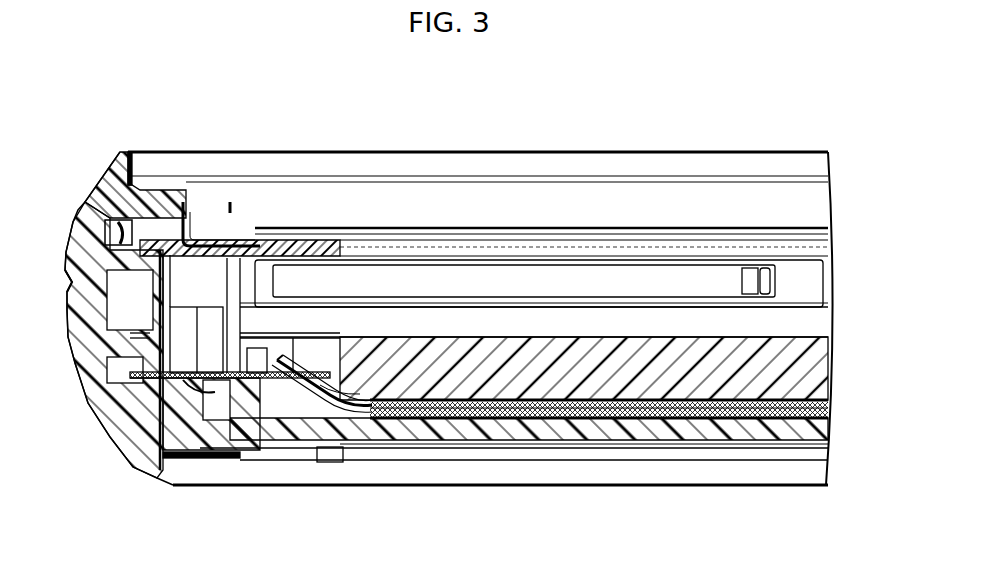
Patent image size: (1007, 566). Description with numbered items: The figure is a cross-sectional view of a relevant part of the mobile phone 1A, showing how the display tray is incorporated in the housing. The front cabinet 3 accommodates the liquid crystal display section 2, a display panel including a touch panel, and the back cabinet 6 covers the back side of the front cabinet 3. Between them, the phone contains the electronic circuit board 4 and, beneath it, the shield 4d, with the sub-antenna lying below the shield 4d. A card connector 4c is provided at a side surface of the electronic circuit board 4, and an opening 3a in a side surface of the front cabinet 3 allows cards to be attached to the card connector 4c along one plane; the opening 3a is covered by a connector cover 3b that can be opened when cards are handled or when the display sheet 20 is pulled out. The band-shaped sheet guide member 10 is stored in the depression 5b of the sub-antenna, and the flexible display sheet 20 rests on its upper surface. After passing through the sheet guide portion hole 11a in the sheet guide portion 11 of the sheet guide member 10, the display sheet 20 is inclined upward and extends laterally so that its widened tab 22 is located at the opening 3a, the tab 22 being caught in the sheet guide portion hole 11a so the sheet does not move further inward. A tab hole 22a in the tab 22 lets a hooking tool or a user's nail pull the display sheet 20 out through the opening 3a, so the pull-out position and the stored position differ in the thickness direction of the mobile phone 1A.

The mobile phone 1A is at (824, 116).
The liquid crystal display section 2 is at (753, 156).
The front cabinet 3 is at (122, 150).
The opening 3a is at (82, 220).
The connector cover 3b is at (66, 290).
The electronic circuit board 4 is at (820, 320).
The card connector 4c is at (641, 280).
The shield 4d is at (805, 370).
The depression 5b is at (662, 425).
The back cabinet 6 is at (778, 480).
The sheet guide member 10 is at (397, 420).
The sheet guide portion 11 is at (297, 362).
The sheet guide portion hole 11a is at (315, 385).
The display sheet 20 is at (150, 350).
The tab 22 is at (183, 380).
The tab hole 22a is at (205, 395).